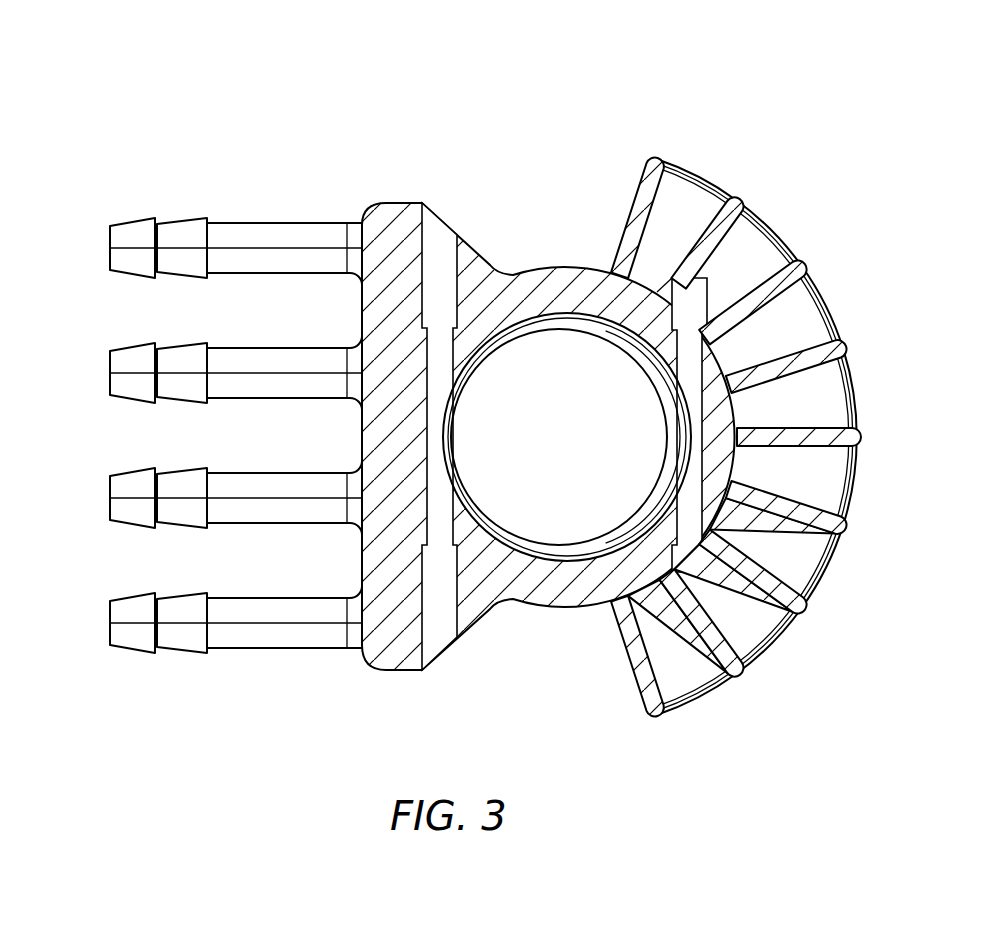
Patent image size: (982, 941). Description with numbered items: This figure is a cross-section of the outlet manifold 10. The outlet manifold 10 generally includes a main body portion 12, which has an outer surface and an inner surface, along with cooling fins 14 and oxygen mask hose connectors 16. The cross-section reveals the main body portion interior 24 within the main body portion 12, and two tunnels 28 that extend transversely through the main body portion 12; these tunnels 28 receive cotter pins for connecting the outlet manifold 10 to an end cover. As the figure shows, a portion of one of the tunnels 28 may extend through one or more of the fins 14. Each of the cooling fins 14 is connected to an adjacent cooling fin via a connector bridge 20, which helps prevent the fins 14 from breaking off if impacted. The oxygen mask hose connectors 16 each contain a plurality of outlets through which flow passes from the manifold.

The outlet manifold 10 is at (491, 470).
The main body portion 12 is at (557, 283).
The cooling fins 14 is at (655, 160).
The oxygen mask hose connectors 16 is at (278, 234).
The connector bridge 20 is at (773, 231).
The main body portion interior 24 is at (581, 452).
The tunnels 28 is at (692, 505).